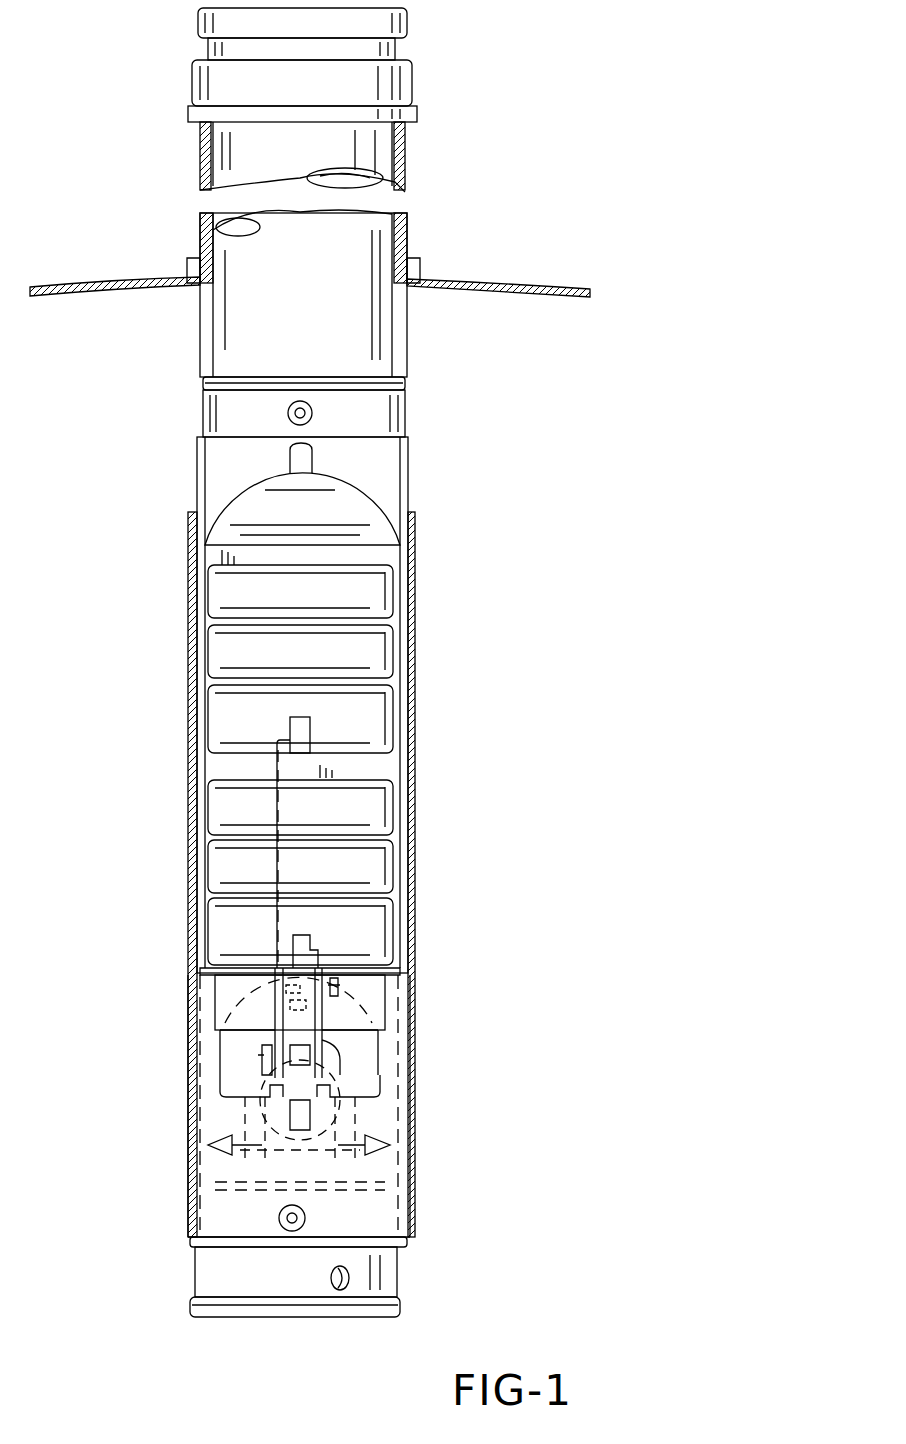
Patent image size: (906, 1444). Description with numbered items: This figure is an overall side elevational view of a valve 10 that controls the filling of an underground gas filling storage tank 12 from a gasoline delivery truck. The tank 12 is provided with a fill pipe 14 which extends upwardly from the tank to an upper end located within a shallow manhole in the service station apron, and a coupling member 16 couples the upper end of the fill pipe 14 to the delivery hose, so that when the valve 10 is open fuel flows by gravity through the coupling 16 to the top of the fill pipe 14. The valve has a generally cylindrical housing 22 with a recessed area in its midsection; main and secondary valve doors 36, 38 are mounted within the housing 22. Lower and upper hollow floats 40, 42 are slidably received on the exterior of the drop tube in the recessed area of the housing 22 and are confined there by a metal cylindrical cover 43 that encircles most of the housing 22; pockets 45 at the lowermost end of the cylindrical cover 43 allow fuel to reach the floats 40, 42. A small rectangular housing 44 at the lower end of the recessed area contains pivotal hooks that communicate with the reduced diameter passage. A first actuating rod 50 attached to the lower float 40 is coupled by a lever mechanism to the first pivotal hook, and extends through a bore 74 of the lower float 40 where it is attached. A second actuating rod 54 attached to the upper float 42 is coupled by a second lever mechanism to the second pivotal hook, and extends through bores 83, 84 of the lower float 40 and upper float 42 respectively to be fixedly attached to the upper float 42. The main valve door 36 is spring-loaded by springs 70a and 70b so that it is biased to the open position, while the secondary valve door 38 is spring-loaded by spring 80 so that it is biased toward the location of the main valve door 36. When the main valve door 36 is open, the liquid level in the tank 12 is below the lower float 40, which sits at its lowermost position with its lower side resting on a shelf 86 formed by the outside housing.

The valve 10 is at (170, 1062).
The underground gas filling storage tank 12 is at (525, 278).
The fill pipe 14 is at (407, 240).
The coupling member 16 is at (420, 90).
The housing 22 is at (190, 603).
The main valve door 36 is at (365, 1020).
The secondary valve door 38 is at (340, 1066).
The lower hollow float 40 is at (395, 862).
The upper hollow float 42 is at (395, 660).
The metal cylindrical cover 43 is at (415, 541).
The small rectangular housing 44 is at (322, 1036).
The pockets 45 is at (240, 1092).
The first actuating rod 50 is at (305, 968).
The second actuating rod 54 is at (272, 1008).
The spring 70a is at (240, 1170).
The spring 70b is at (330, 1174).
The bore 74 is at (325, 968).
The spring 80 is at (290, 1165).
The bore 83 is at (283, 965).
The bore 84 is at (290, 737).
The shelf 86 is at (270, 968).